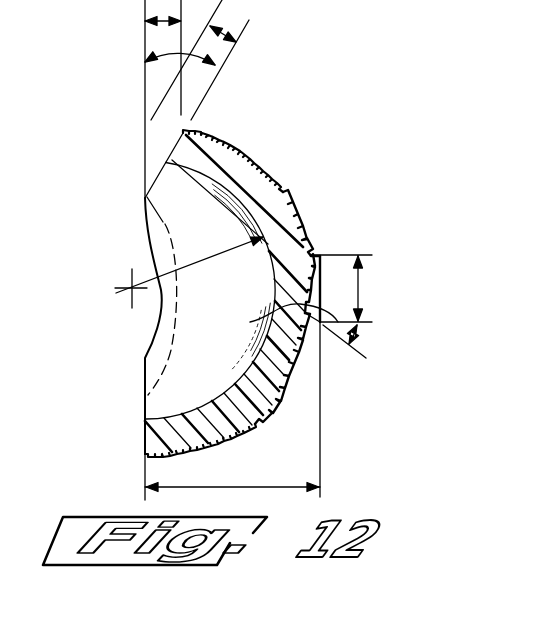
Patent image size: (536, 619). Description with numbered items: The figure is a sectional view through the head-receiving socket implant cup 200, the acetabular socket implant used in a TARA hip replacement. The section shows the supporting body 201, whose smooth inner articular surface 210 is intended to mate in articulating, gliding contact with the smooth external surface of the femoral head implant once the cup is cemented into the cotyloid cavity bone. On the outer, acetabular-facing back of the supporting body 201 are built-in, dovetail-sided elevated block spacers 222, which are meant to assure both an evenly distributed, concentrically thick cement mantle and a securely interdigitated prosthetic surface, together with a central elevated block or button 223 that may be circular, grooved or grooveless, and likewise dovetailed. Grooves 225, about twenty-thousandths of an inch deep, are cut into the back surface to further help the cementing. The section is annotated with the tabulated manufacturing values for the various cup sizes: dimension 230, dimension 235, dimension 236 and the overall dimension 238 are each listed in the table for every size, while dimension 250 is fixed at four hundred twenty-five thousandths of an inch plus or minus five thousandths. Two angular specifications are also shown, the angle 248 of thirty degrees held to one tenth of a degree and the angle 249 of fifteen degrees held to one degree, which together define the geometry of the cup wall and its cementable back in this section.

The head-receiving socket implant cup 200 is at (209, 248).
The supporting body 201 is at (245, 172).
The articular surface 210 is at (167, 354).
The elevated block spacers 222 is at (320, 255).
The central elevated block or button 223 is at (320, 255).
The grooves 225 is at (258, 405).
The dimension 230 is at (200, 262).
The dimension 235 is at (233, 38).
The dimension 236 is at (162, 19).
The dimension 238 is at (180, 488).
The angle 248 is at (207, 53).
The angle 249 is at (263, 328).
The dimension 250 is at (360, 280).